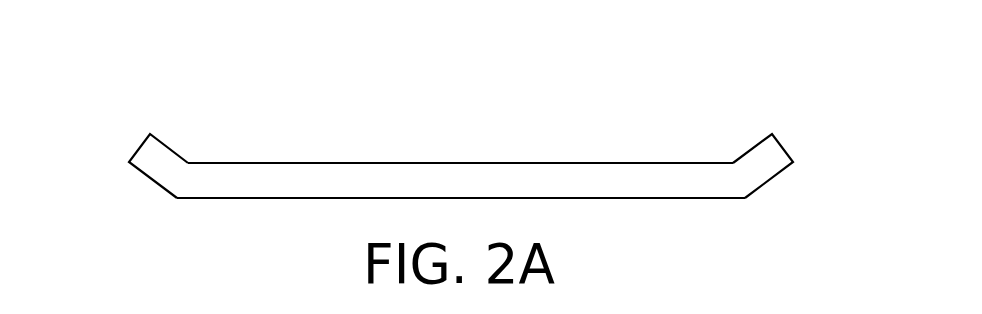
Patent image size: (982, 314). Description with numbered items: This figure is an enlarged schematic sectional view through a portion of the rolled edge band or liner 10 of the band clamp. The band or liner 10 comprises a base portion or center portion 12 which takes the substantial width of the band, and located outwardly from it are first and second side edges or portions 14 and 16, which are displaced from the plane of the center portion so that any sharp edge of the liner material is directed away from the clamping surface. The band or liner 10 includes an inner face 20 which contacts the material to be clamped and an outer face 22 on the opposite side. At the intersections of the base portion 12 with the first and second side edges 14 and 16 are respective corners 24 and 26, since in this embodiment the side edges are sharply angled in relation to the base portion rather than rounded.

The band or liner 10 is at (350, 104).
The base portion 12 is at (462, 179).
The first side edge 14 is at (768, 165).
The second side edge 16 is at (152, 165).
The inner face 20 is at (602, 198).
The outer face 22 is at (532, 162).
The corner 24 is at (745, 198).
The corner 26 is at (177, 200).